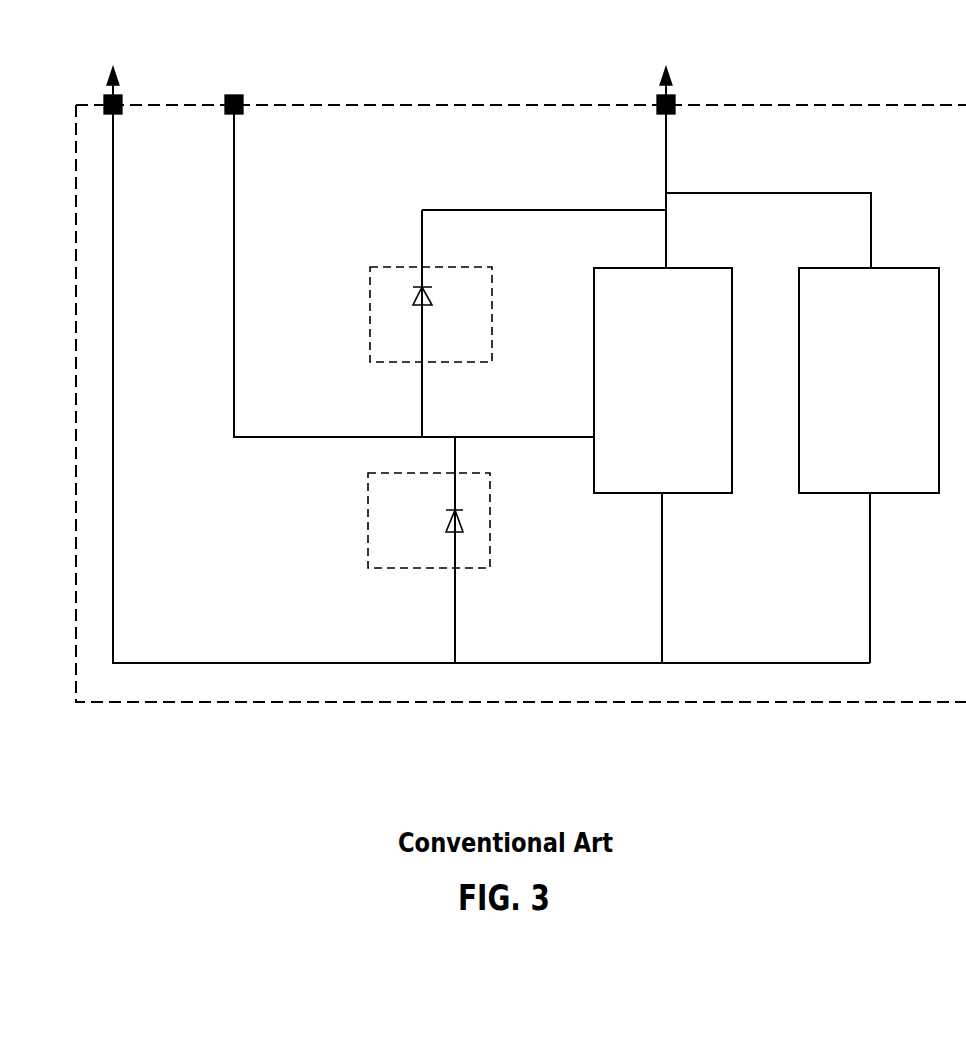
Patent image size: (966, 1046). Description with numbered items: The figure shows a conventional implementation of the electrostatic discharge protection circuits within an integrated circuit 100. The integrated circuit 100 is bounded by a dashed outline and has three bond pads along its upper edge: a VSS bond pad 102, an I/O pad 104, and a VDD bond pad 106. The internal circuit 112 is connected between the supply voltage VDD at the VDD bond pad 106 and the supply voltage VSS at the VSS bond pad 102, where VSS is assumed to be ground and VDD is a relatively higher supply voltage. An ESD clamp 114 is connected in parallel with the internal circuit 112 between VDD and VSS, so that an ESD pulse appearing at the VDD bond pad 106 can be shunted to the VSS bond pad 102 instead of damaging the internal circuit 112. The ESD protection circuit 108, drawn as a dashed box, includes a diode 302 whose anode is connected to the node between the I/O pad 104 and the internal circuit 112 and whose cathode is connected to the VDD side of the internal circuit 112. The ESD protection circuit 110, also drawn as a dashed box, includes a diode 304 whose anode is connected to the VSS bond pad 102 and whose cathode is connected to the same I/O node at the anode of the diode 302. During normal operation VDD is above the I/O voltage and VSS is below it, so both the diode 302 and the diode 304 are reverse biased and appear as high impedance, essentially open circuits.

The integrated circuit 100 is at (922, 105).
The VSS bond pad 102 is at (122, 100).
The I/O pad 104 is at (243, 100).
The VDD bond pad 106 is at (675, 100).
The ESD protection circuit 108 is at (391, 314).
The ESD protection circuit 110 is at (389, 520).
The internal circuit 112 is at (722, 268).
The ESD clamp 114 is at (922, 268).
The diode 302 is at (449, 298).
The diode 304 is at (432, 522).